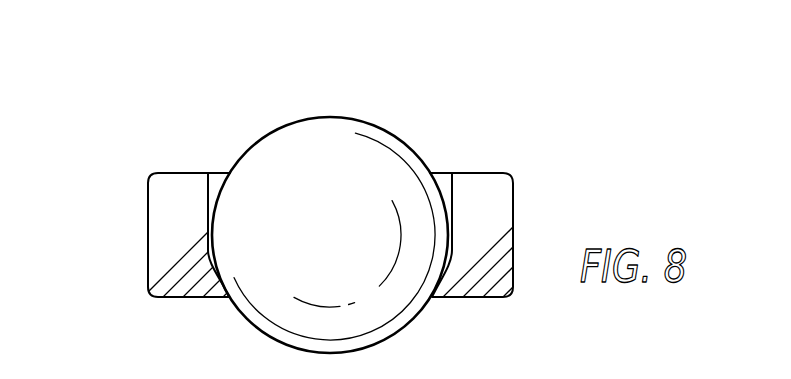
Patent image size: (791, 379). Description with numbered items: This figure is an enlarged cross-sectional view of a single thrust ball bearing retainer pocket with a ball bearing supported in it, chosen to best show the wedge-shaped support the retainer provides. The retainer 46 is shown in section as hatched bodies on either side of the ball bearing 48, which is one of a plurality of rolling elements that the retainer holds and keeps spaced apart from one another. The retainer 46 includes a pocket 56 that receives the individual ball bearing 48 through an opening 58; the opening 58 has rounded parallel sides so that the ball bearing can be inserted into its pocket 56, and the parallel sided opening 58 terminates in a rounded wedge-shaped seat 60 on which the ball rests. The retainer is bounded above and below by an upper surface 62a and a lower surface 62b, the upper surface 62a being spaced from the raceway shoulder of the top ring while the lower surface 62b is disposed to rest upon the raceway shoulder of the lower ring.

The retainer 46 is at (140, 240).
The ball bearing 48 is at (357, 165).
The pocket 56 is at (217, 181).
The opening 58 is at (450, 181).
The rounded wedge-shaped seat 60 is at (400, 327).
The upper surface 62a is at (157, 172).
The lower surface 62b is at (190, 300).